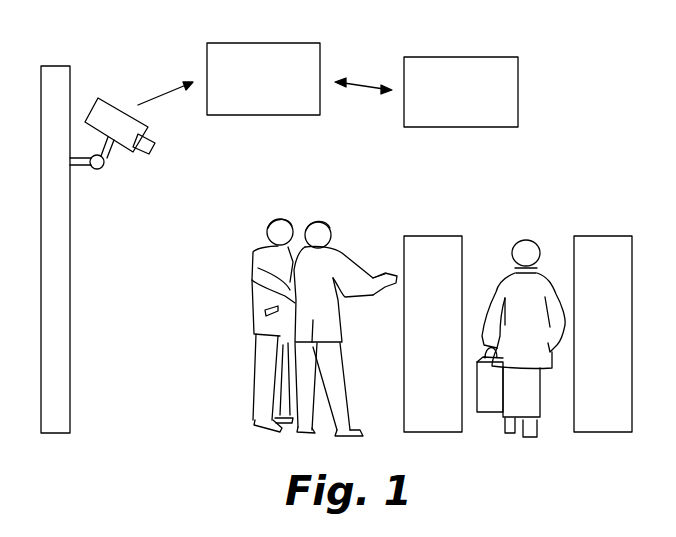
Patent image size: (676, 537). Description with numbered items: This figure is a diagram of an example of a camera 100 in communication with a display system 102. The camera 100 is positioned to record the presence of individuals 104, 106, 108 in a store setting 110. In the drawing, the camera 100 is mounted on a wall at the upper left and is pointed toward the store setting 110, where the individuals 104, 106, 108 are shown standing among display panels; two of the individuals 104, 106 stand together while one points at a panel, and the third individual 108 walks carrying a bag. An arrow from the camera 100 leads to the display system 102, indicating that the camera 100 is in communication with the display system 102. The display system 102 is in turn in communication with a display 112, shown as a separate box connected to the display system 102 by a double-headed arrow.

The camera 100 is at (101, 81).
The display system 102 is at (253, 116).
The individual 104 is at (263, 325).
The individual 106 is at (279, 298).
The individual 108 is at (498, 250).
The store setting 110 is at (377, 198).
The display 112 is at (440, 128).